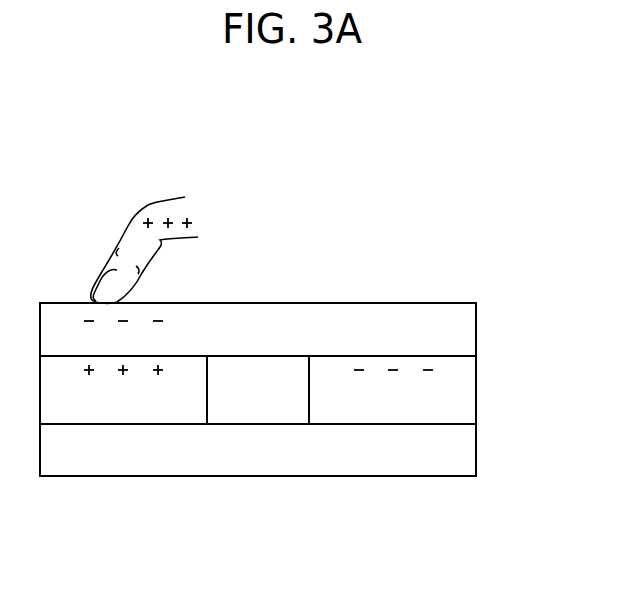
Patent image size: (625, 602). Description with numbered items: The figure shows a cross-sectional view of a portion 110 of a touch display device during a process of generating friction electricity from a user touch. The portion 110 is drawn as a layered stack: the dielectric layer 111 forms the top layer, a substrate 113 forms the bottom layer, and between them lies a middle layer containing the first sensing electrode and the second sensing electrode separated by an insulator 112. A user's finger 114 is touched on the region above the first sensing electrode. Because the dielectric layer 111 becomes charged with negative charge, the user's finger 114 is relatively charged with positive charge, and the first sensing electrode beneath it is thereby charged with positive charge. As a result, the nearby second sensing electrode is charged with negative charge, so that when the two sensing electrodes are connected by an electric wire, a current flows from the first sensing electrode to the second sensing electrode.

The portion of the touch display device 110 is at (279, 195).
The dielectric layer 111 is at (463, 328).
The insulator 112 is at (260, 403).
The substrate 113 is at (463, 452).
The user's finger 114 is at (127, 232).